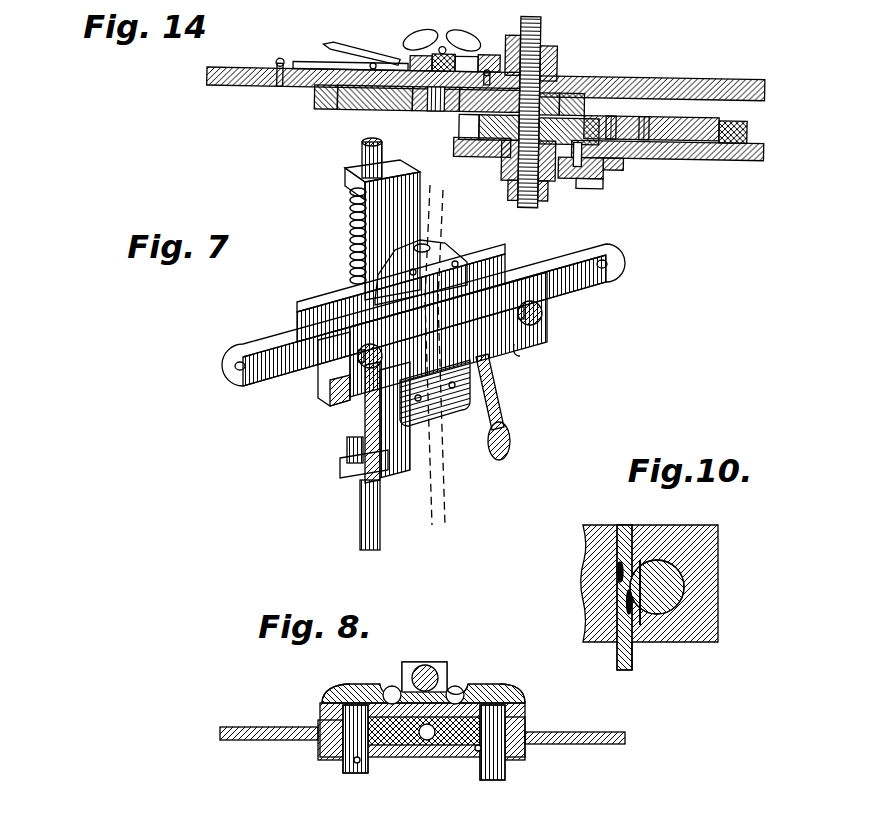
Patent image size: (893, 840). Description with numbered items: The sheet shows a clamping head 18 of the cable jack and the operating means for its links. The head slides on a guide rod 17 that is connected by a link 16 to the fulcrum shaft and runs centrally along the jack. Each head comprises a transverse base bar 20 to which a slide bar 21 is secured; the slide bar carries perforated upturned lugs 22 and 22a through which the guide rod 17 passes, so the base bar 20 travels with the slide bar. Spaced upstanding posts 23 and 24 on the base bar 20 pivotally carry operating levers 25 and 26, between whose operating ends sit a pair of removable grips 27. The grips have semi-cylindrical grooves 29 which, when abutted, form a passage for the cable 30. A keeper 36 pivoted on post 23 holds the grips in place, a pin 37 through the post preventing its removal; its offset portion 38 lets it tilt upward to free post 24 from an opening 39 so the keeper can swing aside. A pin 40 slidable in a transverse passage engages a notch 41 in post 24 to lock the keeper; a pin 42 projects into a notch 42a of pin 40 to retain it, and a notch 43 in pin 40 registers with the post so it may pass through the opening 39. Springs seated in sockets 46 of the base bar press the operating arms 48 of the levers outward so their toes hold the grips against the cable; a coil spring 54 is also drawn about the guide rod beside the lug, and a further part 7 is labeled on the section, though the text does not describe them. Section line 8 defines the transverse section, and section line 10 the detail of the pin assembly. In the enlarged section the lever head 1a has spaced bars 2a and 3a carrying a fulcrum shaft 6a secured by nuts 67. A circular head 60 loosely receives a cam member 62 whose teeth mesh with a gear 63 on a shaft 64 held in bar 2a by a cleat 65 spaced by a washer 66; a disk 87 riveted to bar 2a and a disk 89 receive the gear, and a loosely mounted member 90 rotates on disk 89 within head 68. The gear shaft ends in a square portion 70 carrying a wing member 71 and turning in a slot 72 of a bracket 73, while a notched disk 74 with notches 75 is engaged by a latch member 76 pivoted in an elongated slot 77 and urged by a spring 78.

In FIG. 14, the lever head 1a is at (612, 71).
In FIG. 14, the bar 2a is at (735, 152).
In FIG. 14, the bar 3a is at (706, 78).
In FIG. 14, the fulcrum shaft 6a is at (570, 90).
In FIG. 14, the bushing 7 is at (558, 48).
In FIG. 7, the section line 8 is at (237, 366).
In FIG. 8, the section line 10 is at (434, 752).
In FIG. 14, the link 16 is at (562, 72).
In FIG. 7, the guide rod 17 is at (360, 150).
In FIG. 8, the guide rod 17 is at (424, 664).
In FIG. 7, the clamping head 18 is at (553, 371).
In FIG. 7, the base bar 20 is at (483, 260).
In FIG. 8, the base bar 20 is at (335, 702).
In FIG. 8, the slide bar 21 is at (460, 690).
In FIG. 7, the upturned lug 22 is at (345, 172).
In FIG. 8, the upturned lug 22 is at (440, 668).
In FIG. 7, the upturned lug 22a is at (347, 452).
In FIG. 7, the post 23 is at (383, 354).
In FIG. 8, the post 23 is at (355, 765).
In FIG. 7, the post 24 is at (543, 316).
In FIG. 8, the post 24 is at (492, 772).
In FIG. 10, the post 24 is at (656, 558).
In FIG. 7, the operating lever 25 is at (278, 340).
In FIG. 8, the operating lever 25 is at (292, 727).
In FIG. 7, the operating lever 26 is at (566, 256).
In FIG. 8, the operating lever 26 is at (565, 732).
In FIG. 7, the grip 27 is at (440, 420).
In FIG. 8, the grip 27 is at (440, 757).
In FIG. 7, the semi-cylindrical groove 29 is at (430, 243).
In FIG. 8, the semi-cylindrical groove 29 is at (420, 742).
In FIG. 7, the cable 30 is at (447, 482).
In FIG. 7, the keeper 36 is at (448, 334).
In FIG. 8, the keeper 36 is at (390, 748).
In FIG. 7, the pin 37 is at (330, 388).
In FIG. 8, the pin 37 is at (350, 760).
In FIG. 7, the offset portion 38 is at (365, 412).
In FIG. 8, the offset portion 38 is at (343, 746).
In FIG. 10, the opening 39 is at (680, 612).
In FIG. 7, the pin 40 is at (520, 285).
In FIG. 8, the pin 40 is at (484, 762).
In FIG. 10, the pin 40 is at (622, 526).
In FIG. 10, the notch 41 is at (642, 560).
In FIG. 7, the pin 42 is at (516, 350).
In FIG. 10, the pin 42 is at (612, 572).
In FIG. 10, the notch 42a is at (615, 590).
In FIG. 10, the notch 43 is at (640, 646).
In FIG. 8, the socket 46 is at (390, 685).
In FIG. 7, the operating arm 48 is at (507, 440).
In FIG. 8, the operating arm 48 is at (375, 690).
In FIG. 7, the spring 54 is at (350, 204).
In FIG. 14, the circular head 60 is at (750, 125).
In FIG. 14, the cam member 62 is at (695, 116).
In FIG. 14, the gear 63 is at (430, 108).
In FIG. 14, the shaft 64 is at (605, 180).
In FIG. 14, the cleat 65 is at (585, 173).
In FIG. 14, the washer 66 is at (625, 158).
In FIG. 14, the nut 67 is at (541, 22).
In FIG. 14, the head 68 is at (327, 108).
In FIG. 14, the square bifurcated portion 70 is at (443, 43).
In FIG. 14, the wing member 71 is at (478, 30).
In FIG. 14, the slot 72 is at (410, 30).
In FIG. 14, the bracket 73 is at (282, 58).
In FIG. 14, the disk 74 is at (470, 54).
In FIG. 14, the notch 75 is at (490, 67).
In FIG. 14, the latch member 76 is at (410, 55).
In FIG. 14, the elongated slot 77 is at (325, 58).
In FIG. 14, the spring 78 is at (352, 40).
In FIG. 14, the disk 87 is at (615, 118).
In FIG. 14, the disk 89 is at (458, 148).
In FIG. 14, the loosely mounted member 90 is at (372, 108).